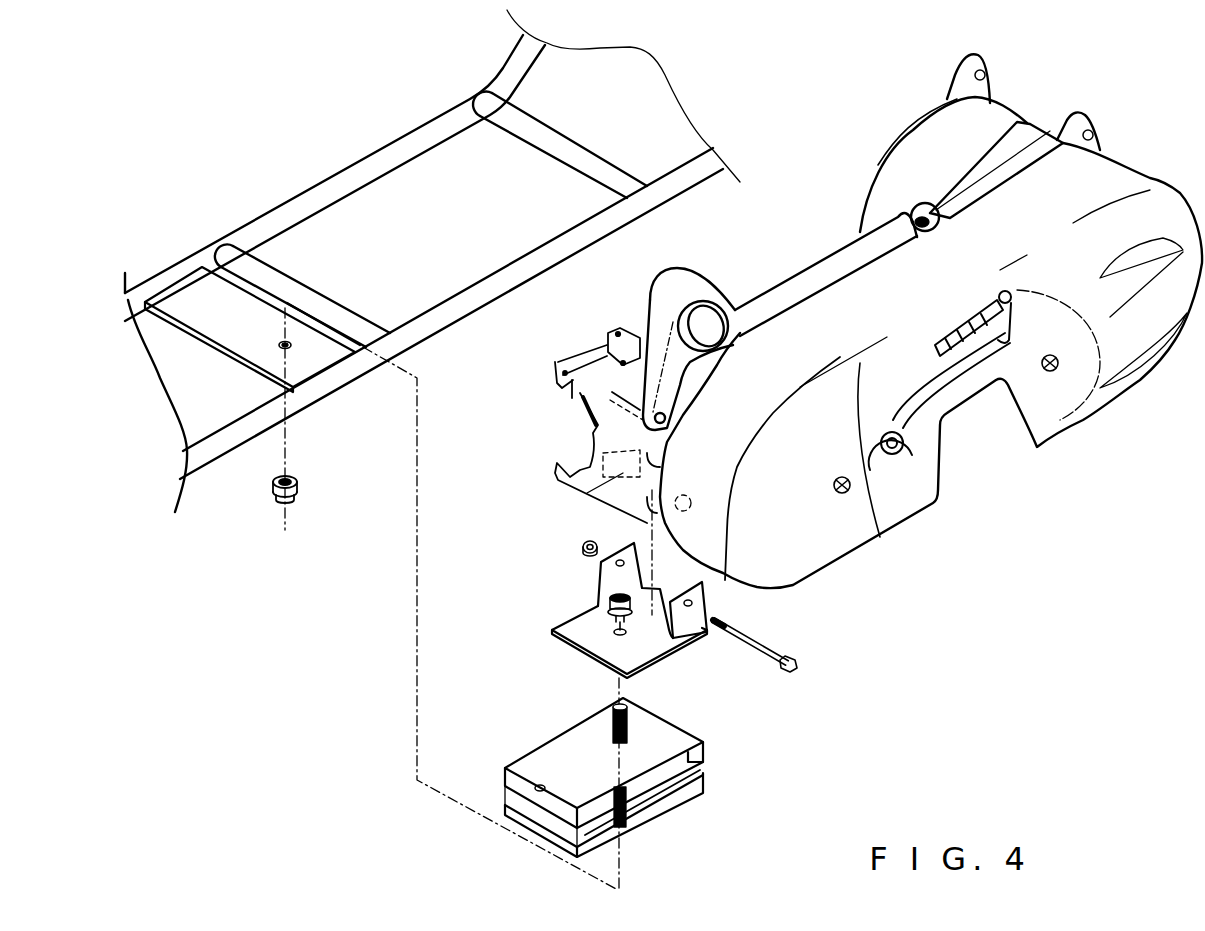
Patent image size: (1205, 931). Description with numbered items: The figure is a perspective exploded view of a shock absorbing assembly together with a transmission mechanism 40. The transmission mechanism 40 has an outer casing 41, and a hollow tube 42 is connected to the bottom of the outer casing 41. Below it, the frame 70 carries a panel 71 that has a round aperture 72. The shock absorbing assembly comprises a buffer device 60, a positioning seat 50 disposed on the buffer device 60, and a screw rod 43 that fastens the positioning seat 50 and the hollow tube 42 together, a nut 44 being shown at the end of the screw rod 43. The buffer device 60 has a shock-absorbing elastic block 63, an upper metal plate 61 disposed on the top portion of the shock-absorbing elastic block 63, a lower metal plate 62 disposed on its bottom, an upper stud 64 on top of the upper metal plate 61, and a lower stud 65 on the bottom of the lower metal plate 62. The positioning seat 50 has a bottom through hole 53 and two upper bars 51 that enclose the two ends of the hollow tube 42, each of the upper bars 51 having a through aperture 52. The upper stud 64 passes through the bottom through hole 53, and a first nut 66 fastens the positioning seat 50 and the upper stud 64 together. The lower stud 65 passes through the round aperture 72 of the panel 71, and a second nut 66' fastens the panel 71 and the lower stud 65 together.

The vehicle body frame 70 is at (441, 113).
The panel 71 is at (240, 361).
The round aperture 72 is at (280, 343).
The second nut 66' is at (287, 507).
The transmission mechanism 40 is at (794, 262).
The outer casing 41 is at (913, 503).
The hollow tube 42 is at (590, 493).
The screw rod 43 is at (760, 643).
The nut 44 is at (582, 541).
The positioning seat 50 is at (621, 618).
The upper bars 51 is at (600, 571).
The through aperture 52 is at (624, 562).
The bottom through hole 53 is at (613, 628).
The first nut 66 is at (647, 643).
The buffer device 60 is at (610, 784).
The upper metal plate 61 is at (702, 741).
The lower metal plate 62 is at (675, 800).
The shock-absorbing elastic block 63 is at (690, 775).
The upper stud 64 is at (606, 713).
The lower stud 65 is at (632, 823).